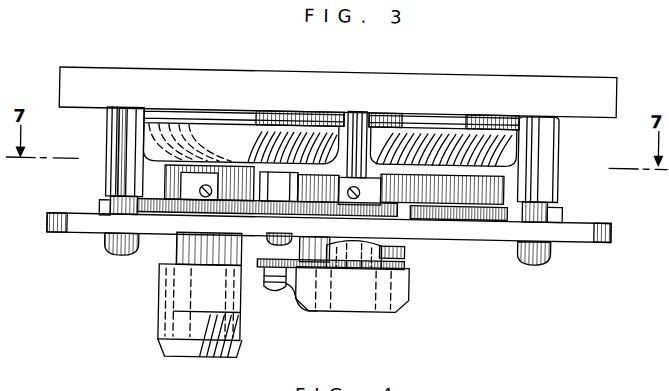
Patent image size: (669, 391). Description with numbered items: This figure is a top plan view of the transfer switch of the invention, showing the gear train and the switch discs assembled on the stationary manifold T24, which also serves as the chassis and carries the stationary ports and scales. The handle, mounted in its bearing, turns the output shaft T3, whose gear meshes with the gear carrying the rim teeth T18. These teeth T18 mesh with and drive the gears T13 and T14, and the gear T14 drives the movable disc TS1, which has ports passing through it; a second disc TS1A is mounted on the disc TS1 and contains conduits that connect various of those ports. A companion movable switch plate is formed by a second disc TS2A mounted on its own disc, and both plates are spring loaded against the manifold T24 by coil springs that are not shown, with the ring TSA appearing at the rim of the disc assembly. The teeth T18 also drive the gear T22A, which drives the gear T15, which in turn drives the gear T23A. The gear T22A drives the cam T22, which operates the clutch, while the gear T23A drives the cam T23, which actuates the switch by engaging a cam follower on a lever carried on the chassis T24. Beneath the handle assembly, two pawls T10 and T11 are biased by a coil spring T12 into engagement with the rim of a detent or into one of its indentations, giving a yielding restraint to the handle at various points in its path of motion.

The stationary manifold T24 is at (146, 76).
The rim ring TSA is at (225, 107).
The second disc TS2A is at (258, 126).
The gear teeth T18 is at (340, 125).
The output shaft T3 is at (371, 124).
The movable disc TS1 is at (478, 122).
The second disc TS1A is at (508, 136).
The gear T13 is at (167, 176).
The gear T14 is at (503, 177).
The gear T23A is at (182, 205).
The gear T22A is at (403, 206).
The gear T15 is at (285, 200).
The pawl T11 is at (410, 250).
The cam T23 is at (185, 296).
The cam T22 is at (358, 297).
The pawl T10 is at (290, 286).
The coil spring T12 is at (292, 296).